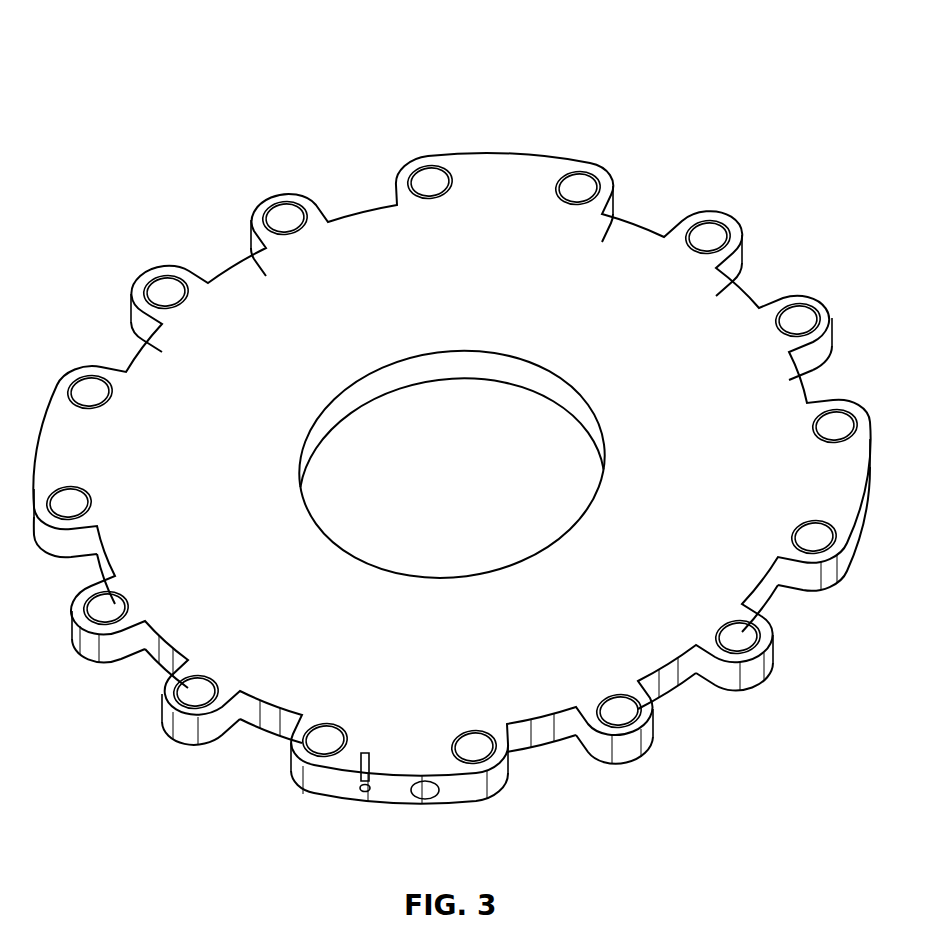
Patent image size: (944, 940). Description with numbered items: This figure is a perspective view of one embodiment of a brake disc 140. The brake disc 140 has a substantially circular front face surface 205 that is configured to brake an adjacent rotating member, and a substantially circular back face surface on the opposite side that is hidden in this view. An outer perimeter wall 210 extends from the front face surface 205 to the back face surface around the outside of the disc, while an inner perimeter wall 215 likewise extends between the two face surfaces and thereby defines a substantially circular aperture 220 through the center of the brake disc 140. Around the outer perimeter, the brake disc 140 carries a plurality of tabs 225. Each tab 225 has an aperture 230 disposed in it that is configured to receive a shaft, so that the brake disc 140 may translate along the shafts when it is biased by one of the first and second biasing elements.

The brake disc 140 is at (213, 40).
The front face surface 205 is at (393, 283).
The outer perimeter wall 210 is at (543, 737).
The inner perimeter wall 215 is at (497, 370).
The aperture 220 is at (375, 465).
The tab 225 is at (827, 316).
The aperture 230 is at (854, 403).